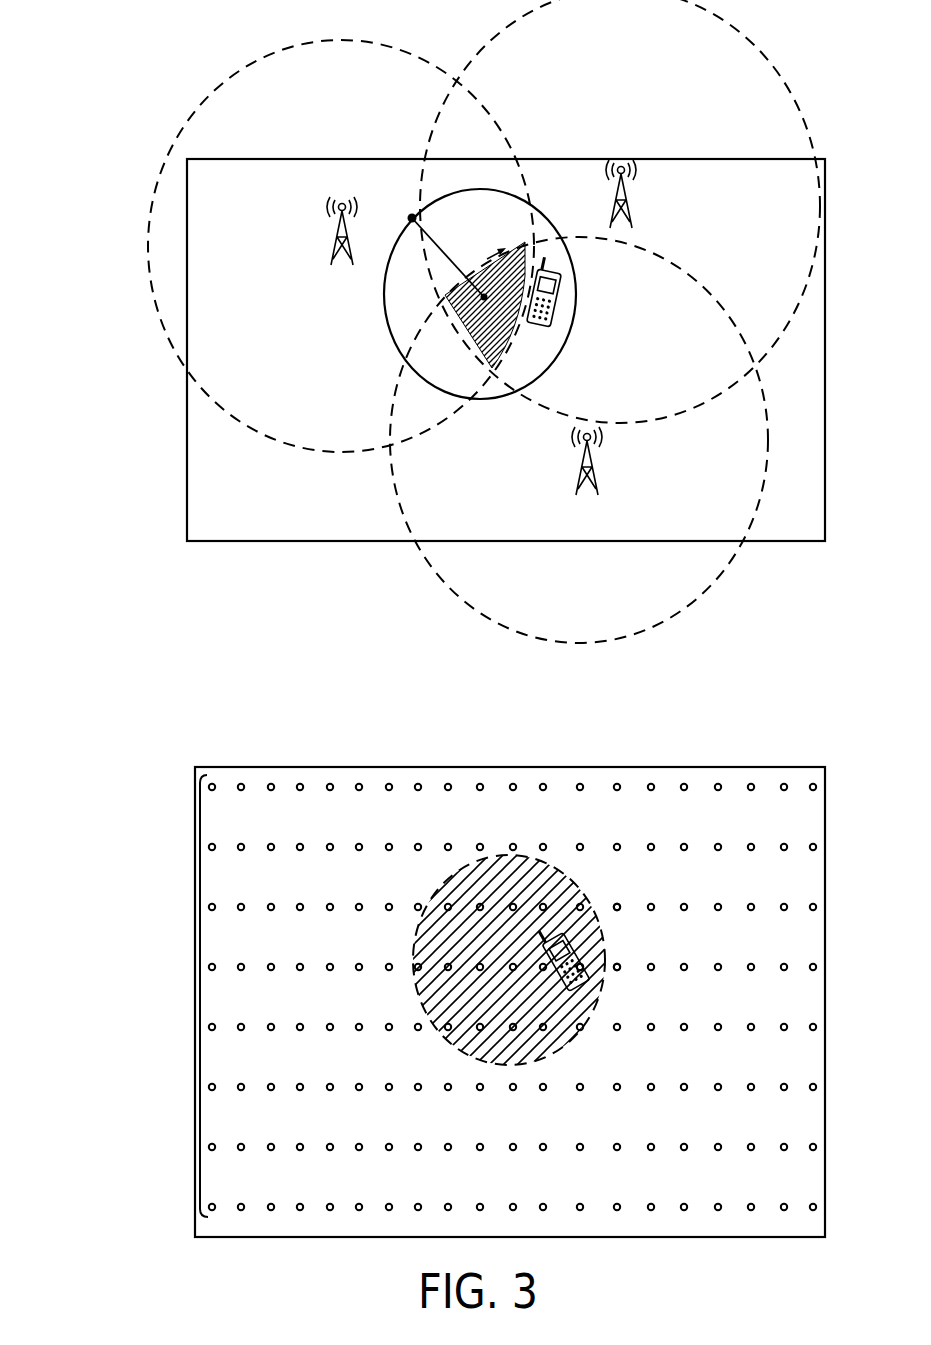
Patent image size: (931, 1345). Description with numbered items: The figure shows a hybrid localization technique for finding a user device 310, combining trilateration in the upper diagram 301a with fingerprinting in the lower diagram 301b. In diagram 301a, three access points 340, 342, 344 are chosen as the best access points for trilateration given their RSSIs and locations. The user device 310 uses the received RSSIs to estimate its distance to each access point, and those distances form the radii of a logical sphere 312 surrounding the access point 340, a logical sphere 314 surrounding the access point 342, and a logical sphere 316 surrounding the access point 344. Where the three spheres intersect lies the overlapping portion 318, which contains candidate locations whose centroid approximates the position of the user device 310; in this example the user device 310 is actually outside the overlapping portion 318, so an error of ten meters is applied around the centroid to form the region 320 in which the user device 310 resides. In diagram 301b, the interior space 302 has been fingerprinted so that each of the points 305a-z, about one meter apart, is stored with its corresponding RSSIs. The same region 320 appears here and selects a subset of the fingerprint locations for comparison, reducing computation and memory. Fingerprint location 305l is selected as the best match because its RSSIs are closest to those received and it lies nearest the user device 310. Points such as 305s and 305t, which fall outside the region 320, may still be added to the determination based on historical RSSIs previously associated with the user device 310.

The diagram 301a is at (172, 64).
The diagram 301b is at (172, 744).
The interior space 302 is at (187, 485).
The user device 310 is at (562, 303).
The logical sphere 312 is at (154, 192).
The logical sphere 314 is at (788, 77).
The logical sphere 316 is at (716, 580).
The overlapping portion 318 is at (477, 349).
The region 320 is at (392, 335).
The access point 340 is at (337, 241).
The access point 342 is at (614, 207).
The access point 344 is at (584, 468).
The points 305a-z is at (200, 997).
The fingerprint point 305s is at (620, 903).
The fingerprint location 305l is at (585, 962).
The fingerprint point 305t is at (620, 975).